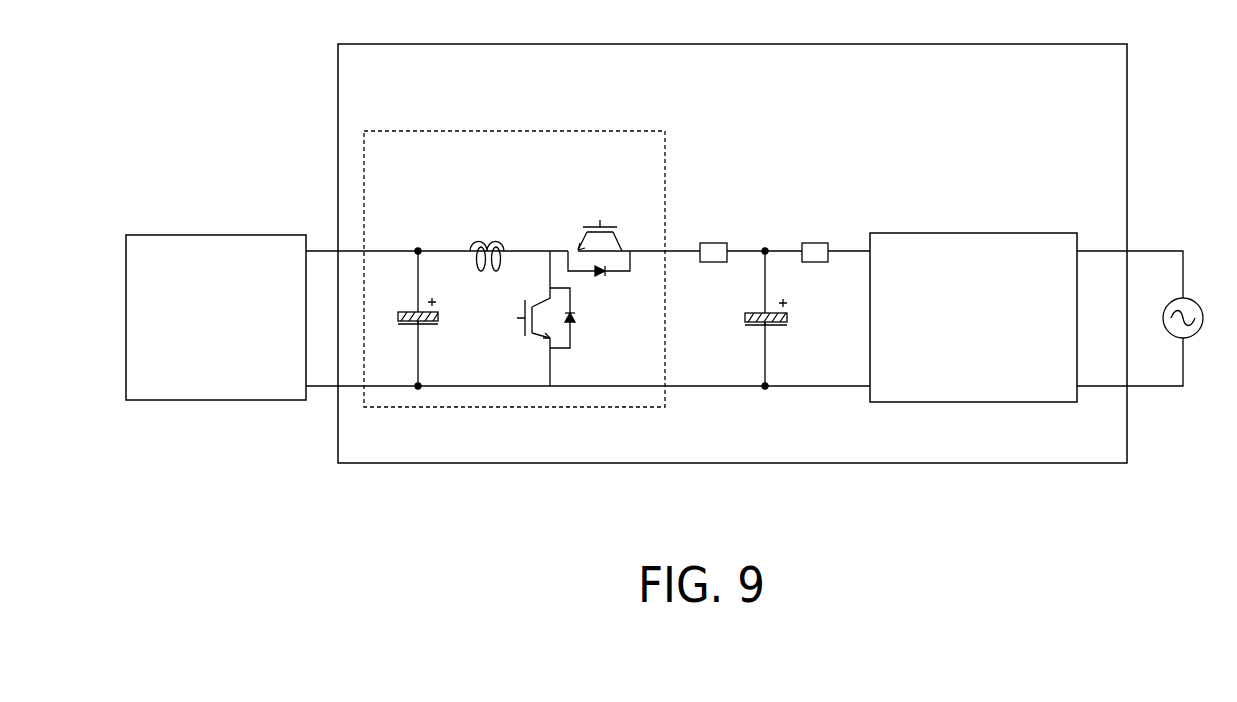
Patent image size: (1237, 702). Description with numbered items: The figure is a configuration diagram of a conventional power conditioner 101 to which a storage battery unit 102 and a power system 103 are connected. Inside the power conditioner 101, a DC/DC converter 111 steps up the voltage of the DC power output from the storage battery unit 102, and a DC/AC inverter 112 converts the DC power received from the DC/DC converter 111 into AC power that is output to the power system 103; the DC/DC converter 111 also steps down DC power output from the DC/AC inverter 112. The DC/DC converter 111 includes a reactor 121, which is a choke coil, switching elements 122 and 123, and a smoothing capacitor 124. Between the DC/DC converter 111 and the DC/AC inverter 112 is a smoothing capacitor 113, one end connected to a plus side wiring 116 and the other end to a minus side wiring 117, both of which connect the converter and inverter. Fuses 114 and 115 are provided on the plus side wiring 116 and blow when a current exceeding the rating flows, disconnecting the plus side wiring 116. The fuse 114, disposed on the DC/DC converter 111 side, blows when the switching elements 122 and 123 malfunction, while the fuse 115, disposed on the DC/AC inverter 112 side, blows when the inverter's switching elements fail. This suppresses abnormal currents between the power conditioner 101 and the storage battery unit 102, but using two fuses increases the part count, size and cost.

The power conditioner 101 is at (338, 79).
The storage battery unit 102 is at (223, 235).
The power system 103 is at (1197, 302).
The DC/DC converter 111 is at (364, 158).
The DC/AC inverter 112 is at (973, 233).
The smoothing capacitor 113 is at (750, 327).
The fuse 114 is at (717, 243).
The fuse 115 is at (818, 243).
The plus side wiring 116 is at (862, 251).
The minus side wiring 117 is at (852, 387).
The reactor 121 is at (492, 248).
The switching element 122 is at (610, 221).
The switching element 123 is at (521, 322).
The smoothing capacitor 124 is at (407, 327).